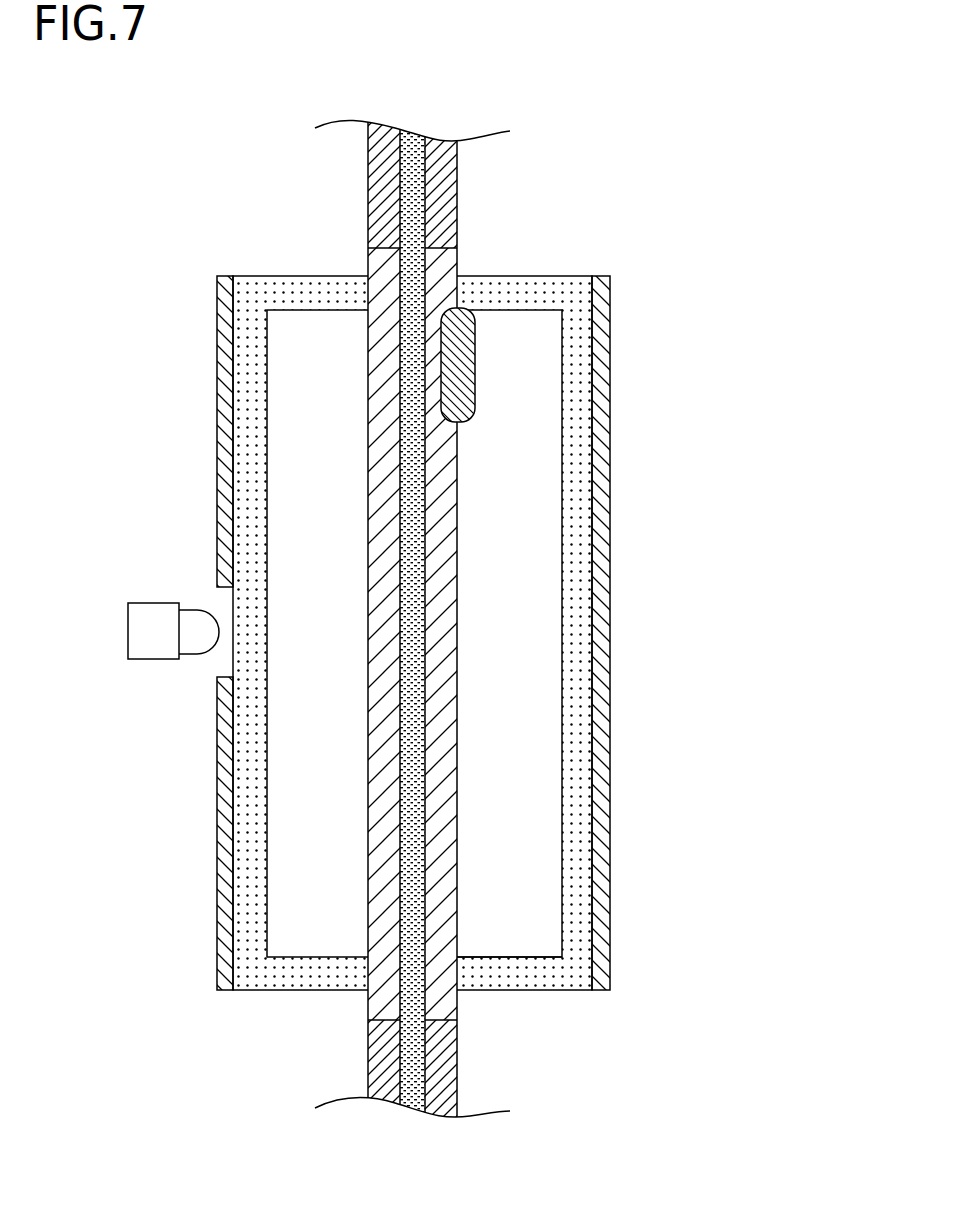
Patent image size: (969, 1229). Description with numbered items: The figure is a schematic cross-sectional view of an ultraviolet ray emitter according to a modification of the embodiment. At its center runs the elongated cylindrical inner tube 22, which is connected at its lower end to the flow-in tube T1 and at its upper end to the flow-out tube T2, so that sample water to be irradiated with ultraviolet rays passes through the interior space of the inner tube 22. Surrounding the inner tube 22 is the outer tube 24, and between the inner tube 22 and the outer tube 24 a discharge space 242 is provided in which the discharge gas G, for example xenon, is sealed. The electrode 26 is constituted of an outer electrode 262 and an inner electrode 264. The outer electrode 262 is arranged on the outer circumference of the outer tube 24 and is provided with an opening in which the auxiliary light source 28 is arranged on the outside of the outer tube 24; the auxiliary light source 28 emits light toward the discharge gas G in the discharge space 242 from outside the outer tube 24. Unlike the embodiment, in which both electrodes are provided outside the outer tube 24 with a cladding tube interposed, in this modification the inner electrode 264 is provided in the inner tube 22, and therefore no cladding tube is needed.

The inner tube 22 is at (520, 620).
The outer tube 24 is at (404, 671).
The discharge space 242 is at (537, 897).
The electrode 26 is at (614, 365).
The outer electrode 262 is at (217, 792).
The inner electrode 264 is at (475, 353).
The auxiliary light source 28 is at (152, 662).
The discharge gas G is at (520, 740).
The tube T1 is at (457, 1063).
The tube T2 is at (457, 190).